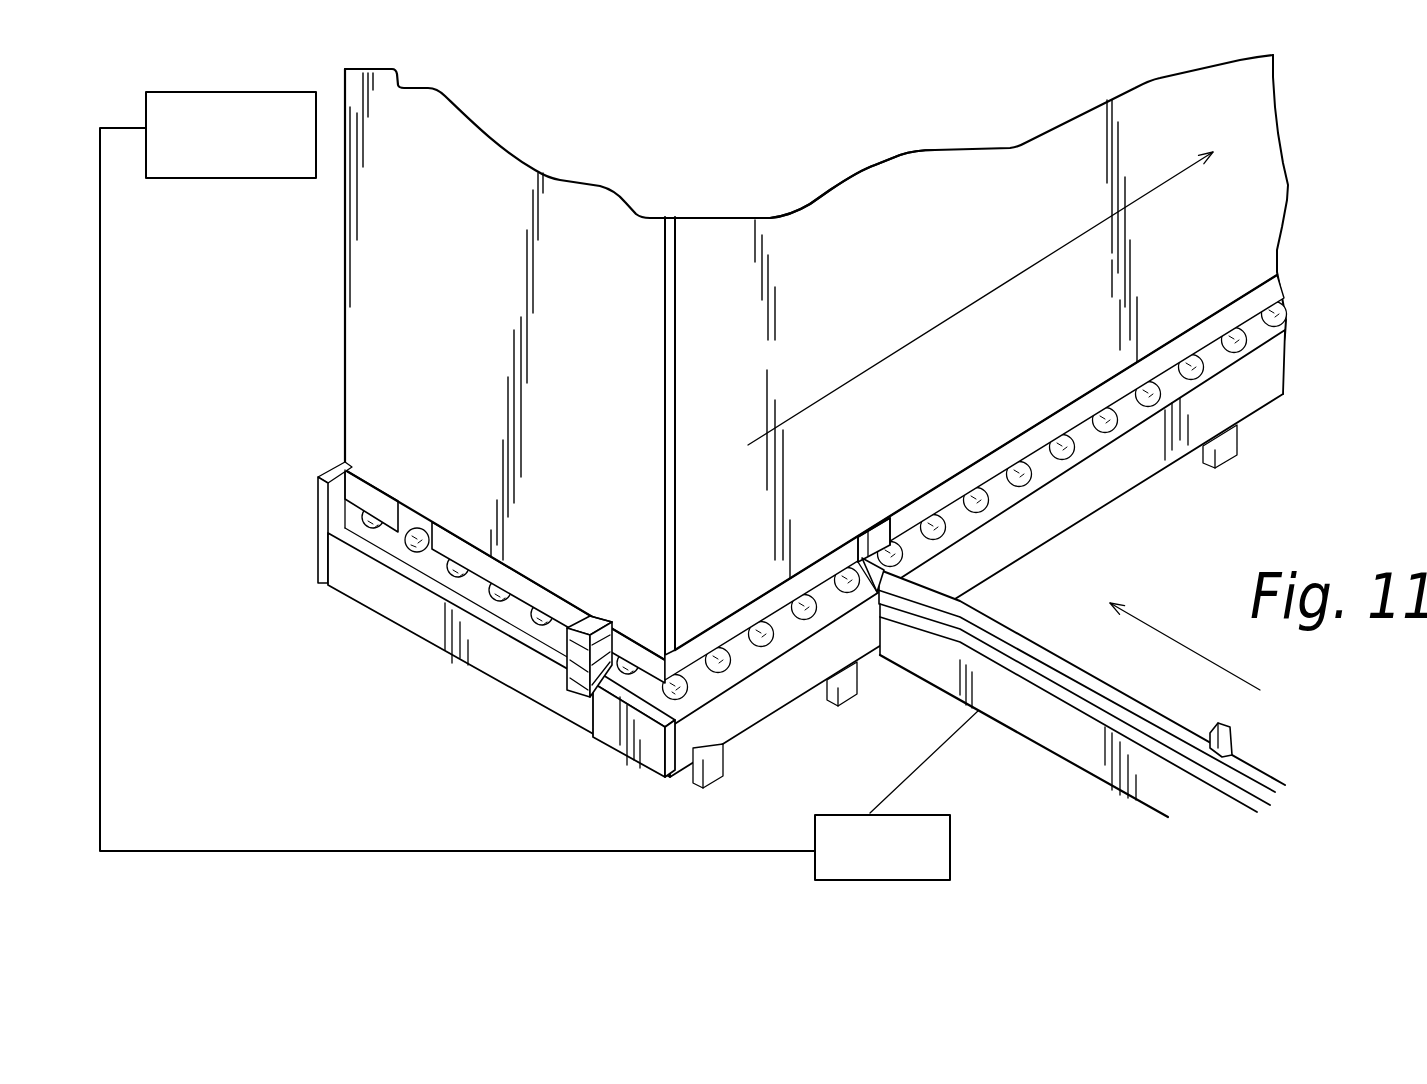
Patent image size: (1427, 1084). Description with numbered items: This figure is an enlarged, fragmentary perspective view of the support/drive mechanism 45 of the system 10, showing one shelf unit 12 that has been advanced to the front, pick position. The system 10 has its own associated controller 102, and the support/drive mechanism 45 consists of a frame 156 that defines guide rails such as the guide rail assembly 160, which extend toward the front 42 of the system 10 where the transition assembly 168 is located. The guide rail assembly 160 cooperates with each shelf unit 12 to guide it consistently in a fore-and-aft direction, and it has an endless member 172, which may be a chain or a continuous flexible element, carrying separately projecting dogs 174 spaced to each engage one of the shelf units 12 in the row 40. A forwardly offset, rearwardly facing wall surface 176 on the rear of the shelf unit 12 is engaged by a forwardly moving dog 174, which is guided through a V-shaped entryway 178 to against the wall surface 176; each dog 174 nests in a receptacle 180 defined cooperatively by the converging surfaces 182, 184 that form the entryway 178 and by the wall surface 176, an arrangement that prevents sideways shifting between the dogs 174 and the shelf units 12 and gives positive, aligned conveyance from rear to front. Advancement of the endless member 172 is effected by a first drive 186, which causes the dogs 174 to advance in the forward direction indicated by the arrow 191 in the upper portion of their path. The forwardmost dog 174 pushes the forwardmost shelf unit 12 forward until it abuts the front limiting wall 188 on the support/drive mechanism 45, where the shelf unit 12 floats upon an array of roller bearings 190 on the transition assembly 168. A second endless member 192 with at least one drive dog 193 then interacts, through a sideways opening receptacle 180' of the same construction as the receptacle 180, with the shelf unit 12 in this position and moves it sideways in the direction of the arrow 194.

The system 10 is at (816, 354).
The shelf unit 12 is at (1003, 62).
The row 40 is at (830, 172).
The front 42 is at (413, 630).
The support/drive mechanism 45 is at (503, 690).
The controller 102 is at (457, 471).
The frame 156 is at (893, 667).
The guide rail assembly 160 is at (1055, 723).
The transition assembly 168 is at (1045, 468).
The endless member 172 is at (1081, 718).
The dog 174 is at (873, 520).
The wall surface 176 is at (860, 530).
The V-shaped entryway 178 is at (890, 520).
The receptacle 180 is at (883, 467).
The sideways opening receptacle 180' is at (482, 680).
The converging surface 182 is at (892, 525).
The converging surface 184 is at (857, 558).
The first drive 186 is at (923, 770).
The front limiting wall 188 is at (340, 505).
The roller bearings 190 is at (410, 552).
The arrow 191 is at (1193, 645).
The endless member 192 is at (583, 693).
The drive dog 193 is at (600, 628).
The arrow 194 is at (1045, 258).